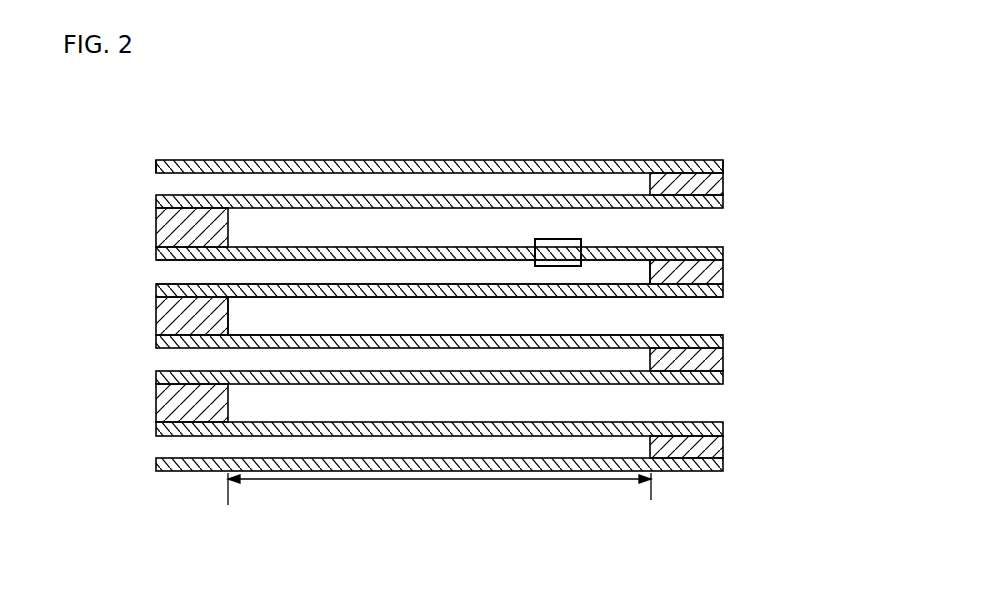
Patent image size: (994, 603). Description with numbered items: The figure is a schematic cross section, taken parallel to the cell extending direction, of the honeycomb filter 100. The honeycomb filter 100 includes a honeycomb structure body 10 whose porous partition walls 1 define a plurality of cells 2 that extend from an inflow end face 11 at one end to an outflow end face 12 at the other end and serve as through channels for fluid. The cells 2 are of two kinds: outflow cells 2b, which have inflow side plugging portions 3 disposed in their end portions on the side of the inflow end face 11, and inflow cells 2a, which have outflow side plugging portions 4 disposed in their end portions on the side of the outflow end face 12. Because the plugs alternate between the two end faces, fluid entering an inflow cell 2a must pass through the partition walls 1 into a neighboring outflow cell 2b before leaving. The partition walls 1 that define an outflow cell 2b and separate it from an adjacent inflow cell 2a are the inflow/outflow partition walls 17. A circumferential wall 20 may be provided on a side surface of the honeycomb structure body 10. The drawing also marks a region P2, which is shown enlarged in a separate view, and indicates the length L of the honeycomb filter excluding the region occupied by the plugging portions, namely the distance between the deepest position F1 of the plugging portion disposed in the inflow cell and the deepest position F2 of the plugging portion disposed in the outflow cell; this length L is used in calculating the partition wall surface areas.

The honeycomb filter 100 is at (706, 75).
The honeycomb structure body 10 is at (451, 158).
The porous partition wall 1 is at (336, 206).
The inflow/outflow partition wall 17 is at (439, 315).
The cell 2 is at (445, 297).
The inflow cell 2a is at (160, 273).
The outflow cell 2b is at (622, 318).
The inflow side plugging portion 3 is at (163, 318).
The outflow side plugging portion 4 is at (713, 360).
The inflow end face 11 is at (155, 167).
The outflow end face 12 is at (723, 162).
The circumferential wall 20 is at (692, 472).
The region P2 is at (550, 239).
The deepest position of the plugging portion disposed in the inflow cell F1 is at (229, 503).
The deepest position of the plugging portion disposed in the outflow cell F2 is at (651, 501).
The length of the honeycomb filter excluding a region occupied by the plugging porti L is at (439, 492).